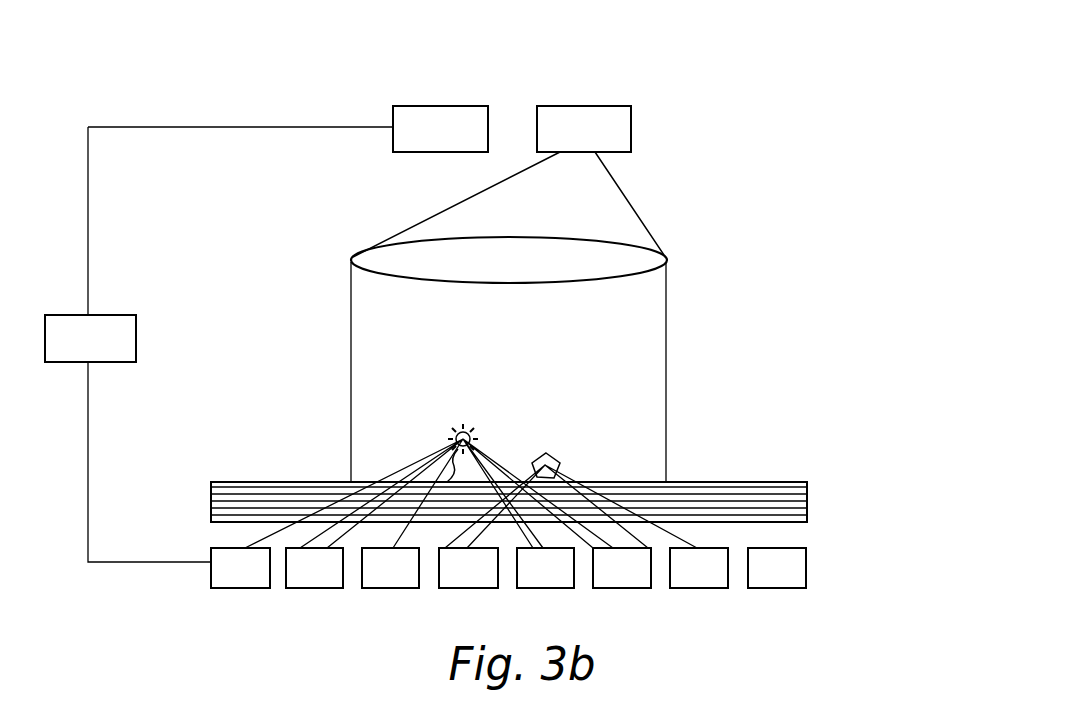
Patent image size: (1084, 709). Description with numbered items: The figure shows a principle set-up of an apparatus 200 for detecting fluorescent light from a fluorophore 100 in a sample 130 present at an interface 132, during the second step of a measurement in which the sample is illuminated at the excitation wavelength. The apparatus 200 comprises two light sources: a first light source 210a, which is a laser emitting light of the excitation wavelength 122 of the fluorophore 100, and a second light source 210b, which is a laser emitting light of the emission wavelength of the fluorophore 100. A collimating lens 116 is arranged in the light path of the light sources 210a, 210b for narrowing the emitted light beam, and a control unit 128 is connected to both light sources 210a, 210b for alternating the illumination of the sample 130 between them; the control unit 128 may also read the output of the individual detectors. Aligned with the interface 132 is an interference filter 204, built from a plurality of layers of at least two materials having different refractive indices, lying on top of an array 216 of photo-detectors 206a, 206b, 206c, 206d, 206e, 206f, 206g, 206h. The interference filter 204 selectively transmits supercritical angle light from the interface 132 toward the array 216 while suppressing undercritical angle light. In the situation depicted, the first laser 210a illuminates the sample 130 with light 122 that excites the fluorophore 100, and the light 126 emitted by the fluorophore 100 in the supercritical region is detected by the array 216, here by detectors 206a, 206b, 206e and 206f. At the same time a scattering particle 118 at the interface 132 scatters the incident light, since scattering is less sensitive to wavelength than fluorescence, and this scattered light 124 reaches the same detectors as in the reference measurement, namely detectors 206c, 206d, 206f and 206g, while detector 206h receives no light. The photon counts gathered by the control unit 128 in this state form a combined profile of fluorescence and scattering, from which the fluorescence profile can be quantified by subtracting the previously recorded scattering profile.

The apparatus 200 is at (207, 98).
The control unit 128 is at (70, 351).
The first light source 210a is at (556, 142).
The second light source 210b is at (412, 142).
The excitation wavelength light 122 is at (585, 224).
The collimating lens 116 is at (352, 260).
The sample 130 is at (763, 328).
The interference filter 204 is at (576, 455).
The interface 132 is at (768, 466).
The emitted light 126 is at (303, 505).
The scattered light 124 is at (678, 522).
The fluorophore 100 is at (435, 432).
The scattering particle 118 is at (585, 458).
The photo-detector array 216 is at (582, 561).
The photo-detector 206a is at (216, 581).
The photo-detector 206b is at (290, 581).
The photo-detector 206c is at (366, 581).
The photo-detector 206d is at (444, 581).
The photo-detector 206e is at (521, 581).
The photo-detector 206f is at (600, 581).
The photo-detector 206g is at (675, 581).
The photo-detector 206h is at (823, 570).